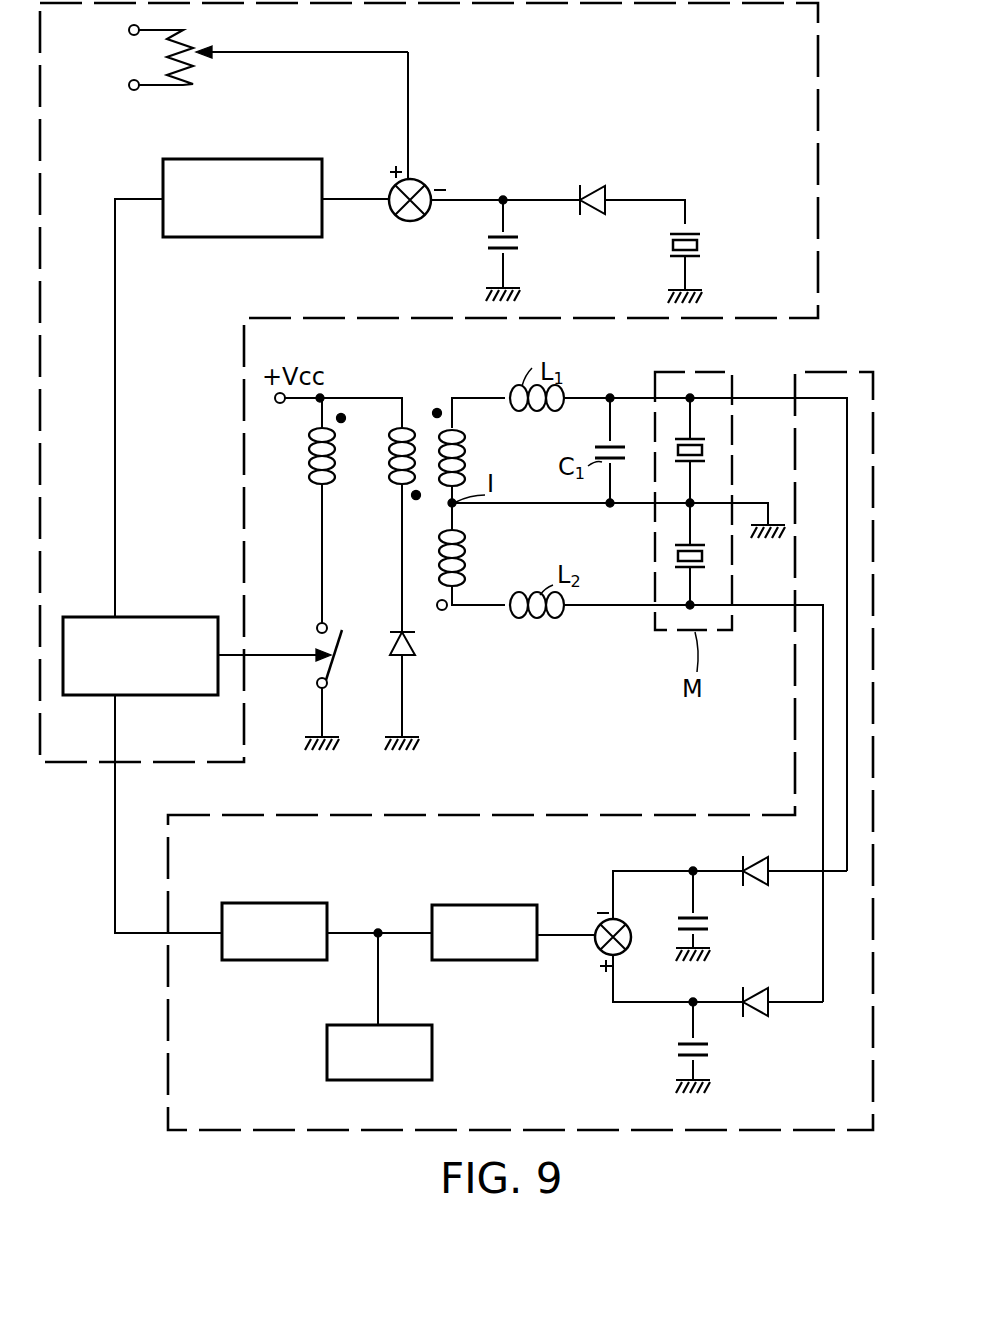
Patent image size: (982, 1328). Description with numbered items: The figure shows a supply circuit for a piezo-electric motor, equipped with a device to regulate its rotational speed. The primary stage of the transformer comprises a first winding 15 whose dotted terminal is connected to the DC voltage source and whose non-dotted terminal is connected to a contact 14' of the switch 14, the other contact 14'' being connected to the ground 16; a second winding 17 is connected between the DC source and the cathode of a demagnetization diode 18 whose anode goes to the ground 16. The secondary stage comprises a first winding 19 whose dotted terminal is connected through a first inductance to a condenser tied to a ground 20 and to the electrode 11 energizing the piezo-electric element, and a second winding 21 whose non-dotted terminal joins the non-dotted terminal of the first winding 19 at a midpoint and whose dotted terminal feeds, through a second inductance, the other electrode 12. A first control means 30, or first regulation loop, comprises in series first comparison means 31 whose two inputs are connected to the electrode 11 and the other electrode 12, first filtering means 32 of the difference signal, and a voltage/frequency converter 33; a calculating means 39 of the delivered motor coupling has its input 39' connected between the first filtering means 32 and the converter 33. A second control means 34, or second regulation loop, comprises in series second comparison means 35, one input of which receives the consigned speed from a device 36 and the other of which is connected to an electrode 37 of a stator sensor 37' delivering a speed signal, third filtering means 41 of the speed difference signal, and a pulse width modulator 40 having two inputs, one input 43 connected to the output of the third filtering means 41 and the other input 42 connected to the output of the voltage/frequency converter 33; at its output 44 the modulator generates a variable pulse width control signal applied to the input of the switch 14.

The electrode 11 is at (630, 398).
The other electrode 12 is at (630, 608).
The switch 14 is at (352, 662).
The contact of the switch 14' is at (298, 609).
The other contact of the switch 14'' is at (292, 707).
The first winding 15 is at (312, 455).
The ground 16 is at (396, 735).
The second winding 17 is at (390, 450).
The demagnetization diode 18 is at (415, 650).
The first winding 19 is at (465, 452).
The ground 20 is at (770, 520).
The second winding 21 is at (470, 555).
The first control means 30 is at (166, 1131).
The first comparison means 31 is at (596, 950).
The first filtering means 32 is at (490, 963).
The voltage/frequency converter 33 is at (268, 963).
The second control means 34 is at (834, 206).
The second comparison means 35 is at (418, 178).
The device to a consigned speed 36 is at (160, 88).
The electrode 37 is at (558, 219).
The stator sensor 37' is at (714, 242).
The calculating means 39 is at (415, 1053).
The input 39' is at (409, 977).
The pulse width modulator 40 is at (78, 697).
The third filtering means 41 is at (281, 159).
The other input 42 is at (118, 697).
The input 43 is at (110, 615).
The output 44 is at (218, 650).